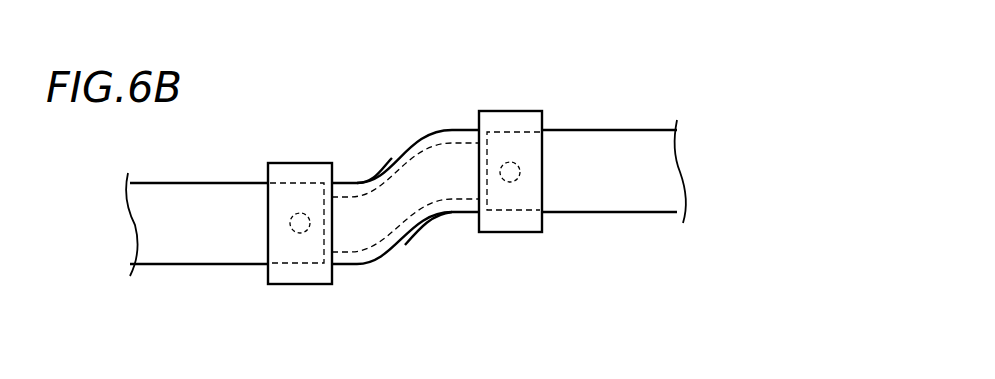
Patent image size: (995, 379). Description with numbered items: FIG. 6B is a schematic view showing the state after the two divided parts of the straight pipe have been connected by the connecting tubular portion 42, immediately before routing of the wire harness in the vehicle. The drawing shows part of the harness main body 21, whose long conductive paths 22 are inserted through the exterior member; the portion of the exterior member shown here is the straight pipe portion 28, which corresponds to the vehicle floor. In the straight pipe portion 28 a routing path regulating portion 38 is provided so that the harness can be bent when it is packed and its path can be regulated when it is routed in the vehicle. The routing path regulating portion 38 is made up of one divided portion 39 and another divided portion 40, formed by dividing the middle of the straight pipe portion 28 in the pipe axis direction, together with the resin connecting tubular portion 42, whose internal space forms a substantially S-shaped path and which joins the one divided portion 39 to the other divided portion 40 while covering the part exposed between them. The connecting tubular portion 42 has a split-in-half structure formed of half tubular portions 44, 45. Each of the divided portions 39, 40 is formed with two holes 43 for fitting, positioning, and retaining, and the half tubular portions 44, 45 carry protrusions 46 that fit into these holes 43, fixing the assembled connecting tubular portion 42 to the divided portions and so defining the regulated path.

The harness main body 21 is at (662, 57).
The conductive path 22 is at (665, 156).
The straight pipe portion 28 is at (665, 192).
The routing path regulating portion 38 is at (386, 270).
The one divided portion 39 is at (293, 171).
The other divided portion 40 is at (515, 142).
The connecting tubular portion 42 is at (387, 155).
The hole 43 is at (290, 228).
The half tubular portion 44 is at (423, 131).
The half tubular portion 45 is at (440, 224).
The protrusion 46 is at (520, 176).